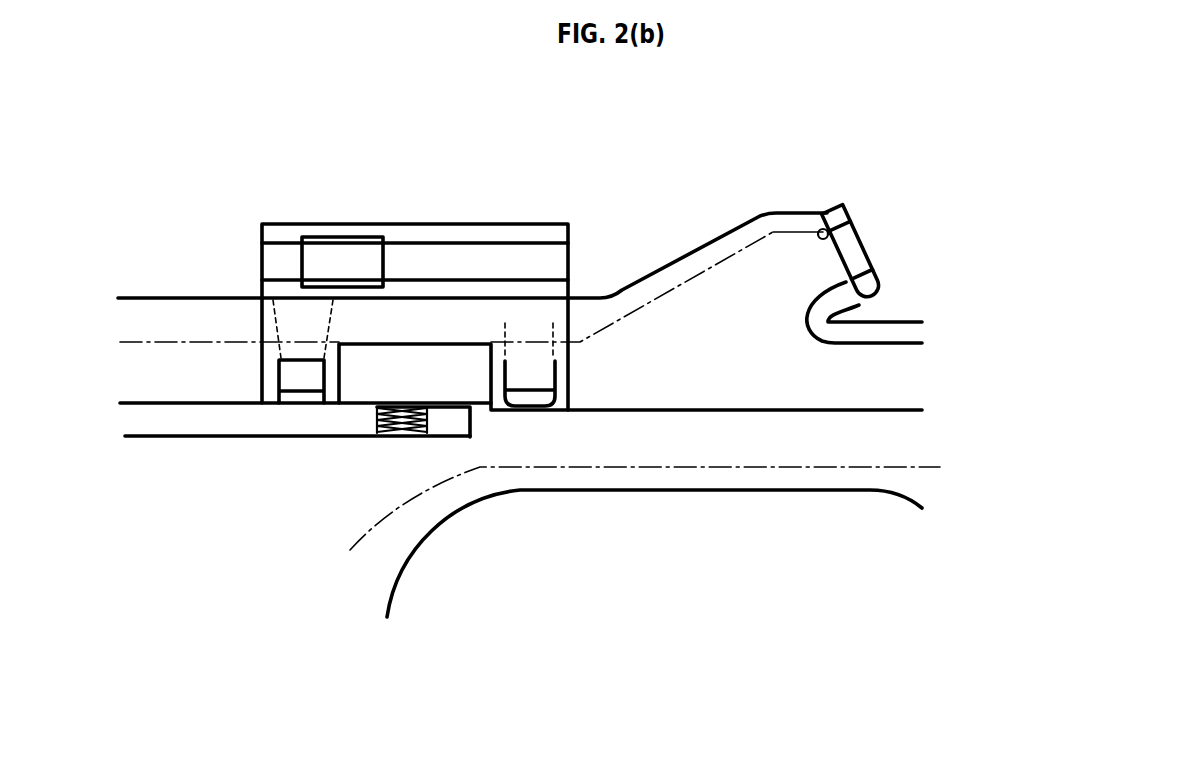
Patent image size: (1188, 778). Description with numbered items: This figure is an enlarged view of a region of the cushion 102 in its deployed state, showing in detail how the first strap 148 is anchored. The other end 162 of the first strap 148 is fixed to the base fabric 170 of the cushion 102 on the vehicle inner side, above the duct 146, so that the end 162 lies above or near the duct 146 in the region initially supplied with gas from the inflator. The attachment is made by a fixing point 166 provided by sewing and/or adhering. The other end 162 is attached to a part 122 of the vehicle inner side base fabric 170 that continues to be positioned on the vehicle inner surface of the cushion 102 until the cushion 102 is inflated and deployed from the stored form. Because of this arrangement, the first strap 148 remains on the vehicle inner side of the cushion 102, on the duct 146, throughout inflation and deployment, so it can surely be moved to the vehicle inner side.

The cushion 102 is at (922, 378).
The part of the vehicle inner side base fabric 122 is at (377, 420).
The duct 146 is at (717, 437).
The first strap 148 is at (175, 415).
The other end of the first strap 162 is at (450, 423).
The fixing point 166 is at (407, 403).
The base fabric 170 is at (262, 473).